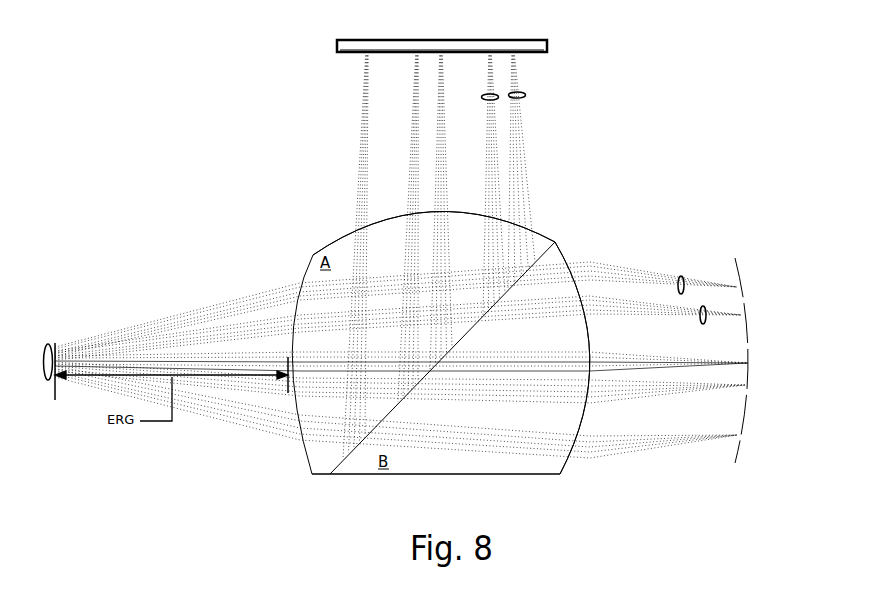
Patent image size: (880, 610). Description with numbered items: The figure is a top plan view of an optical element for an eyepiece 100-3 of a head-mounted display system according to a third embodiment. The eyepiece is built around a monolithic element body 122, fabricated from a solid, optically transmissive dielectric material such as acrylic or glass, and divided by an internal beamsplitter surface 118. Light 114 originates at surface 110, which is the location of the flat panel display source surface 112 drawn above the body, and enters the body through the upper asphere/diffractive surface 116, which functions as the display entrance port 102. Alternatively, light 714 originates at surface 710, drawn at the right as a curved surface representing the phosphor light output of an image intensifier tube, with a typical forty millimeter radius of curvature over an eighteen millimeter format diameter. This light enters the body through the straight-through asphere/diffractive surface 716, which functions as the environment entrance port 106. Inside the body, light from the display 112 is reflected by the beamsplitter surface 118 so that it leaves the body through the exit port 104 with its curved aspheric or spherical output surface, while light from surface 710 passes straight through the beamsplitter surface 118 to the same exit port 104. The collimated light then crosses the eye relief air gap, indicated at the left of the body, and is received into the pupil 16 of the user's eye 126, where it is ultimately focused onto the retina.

The pupil 16 is at (49, 343).
The eyepiece 100-3 is at (650, 150).
The display entrance port 102 is at (463, 213).
The exit port 104 is at (298, 430).
The environment entrance port 106 is at (577, 430).
The surface 110 is at (423, 52).
The flat panel display source surface 112 is at (423, 40).
The light 114 is at (498, 98).
The upper asphere/diffractive surface 116 is at (434, 233).
The beamsplitter surface 118 is at (350, 453).
The body 122 is at (313, 252).
The eye 126 is at (55, 345).
The surface 710 is at (735, 266).
The light 714 is at (705, 305).
The straight-through asphere/diffractive surface 716 is at (572, 358).